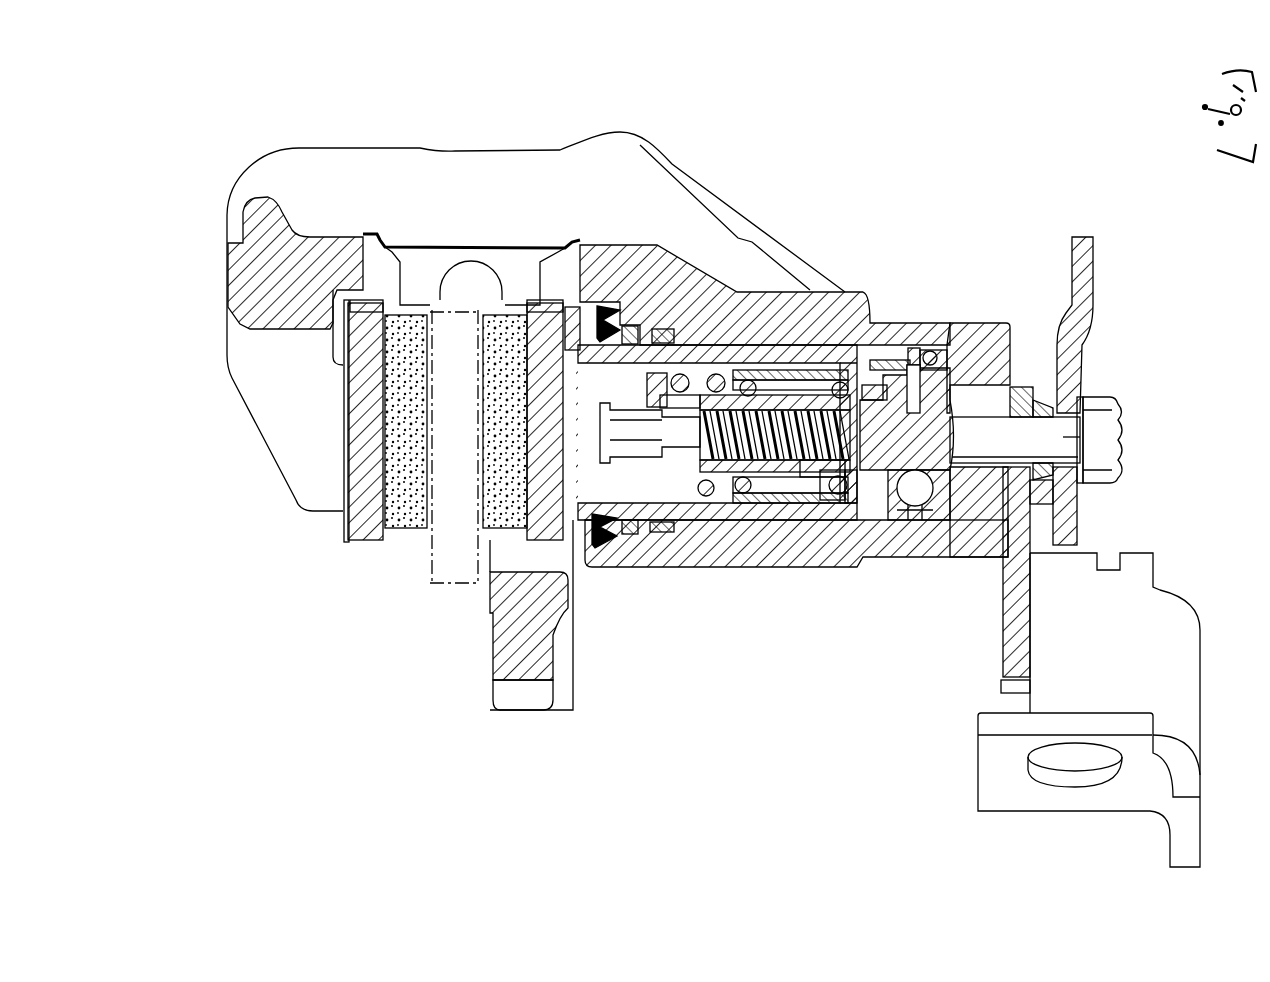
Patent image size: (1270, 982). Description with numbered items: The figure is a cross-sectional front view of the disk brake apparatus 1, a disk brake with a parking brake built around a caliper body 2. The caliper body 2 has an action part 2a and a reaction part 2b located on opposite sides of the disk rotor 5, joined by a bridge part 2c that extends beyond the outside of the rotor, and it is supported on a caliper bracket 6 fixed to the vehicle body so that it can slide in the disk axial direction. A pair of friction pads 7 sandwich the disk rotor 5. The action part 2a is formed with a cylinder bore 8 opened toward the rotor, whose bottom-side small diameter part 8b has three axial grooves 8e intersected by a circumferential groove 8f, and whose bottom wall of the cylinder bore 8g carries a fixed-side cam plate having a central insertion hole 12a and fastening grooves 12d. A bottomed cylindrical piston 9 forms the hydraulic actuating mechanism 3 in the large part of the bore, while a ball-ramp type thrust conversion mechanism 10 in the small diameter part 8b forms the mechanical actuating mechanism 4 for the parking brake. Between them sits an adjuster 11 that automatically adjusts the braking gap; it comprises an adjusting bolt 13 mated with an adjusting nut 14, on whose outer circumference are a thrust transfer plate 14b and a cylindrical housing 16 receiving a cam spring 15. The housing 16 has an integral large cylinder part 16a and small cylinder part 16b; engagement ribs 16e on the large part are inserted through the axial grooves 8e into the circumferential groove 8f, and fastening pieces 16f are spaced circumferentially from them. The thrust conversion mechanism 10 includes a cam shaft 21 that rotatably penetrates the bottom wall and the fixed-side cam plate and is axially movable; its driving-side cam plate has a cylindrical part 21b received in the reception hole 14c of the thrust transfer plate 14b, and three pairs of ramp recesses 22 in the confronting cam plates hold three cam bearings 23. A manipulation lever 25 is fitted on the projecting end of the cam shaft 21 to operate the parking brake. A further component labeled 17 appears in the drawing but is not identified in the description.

The disk brake apparatus 1 is at (681, 40).
The caliper body 2 is at (584, 283).
The action part 2a is at (975, 328).
The reaction part 2b is at (238, 340).
The bridge part 2c is at (458, 168).
The hydraulic actuating mechanism 3 is at (680, 545).
The mechanical actuating mechanism 4 is at (975, 370).
The disk rotor 5 is at (455, 586).
The caliper bracket 6 is at (540, 663).
The friction pads 7 is at (516, 304).
The cylinder bore 8 is at (706, 545).
The small diameter part 8b is at (858, 520).
The axial grooves 8e is at (840, 360).
The circumferential groove 8f is at (935, 360).
The bottom wall of the cylinder bore 8g is at (975, 540).
The piston 9 is at (650, 540).
The thrust conversion mechanism 10 is at (910, 522).
The adjuster 11 is at (762, 516).
The insertion hole 12a is at (945, 437).
The fastening grooves 12d is at (1030, 537).
The adjusting bolt 13 is at (745, 500).
The adjusting nut 14 is at (770, 505).
The thrust transfer plate 14b is at (835, 505).
The reception hole 14c is at (800, 500).
The cam spring 15 is at (748, 370).
The cylindrical housing 16 is at (822, 345).
The large cylinder part 16a is at (895, 370).
The small cylinder part 16b is at (783, 365).
The engagement ribs 16e is at (915, 360).
The fastening pieces 16f is at (940, 520).
The push rod 17 is at (703, 345).
The cam shaft 21 is at (1062, 440).
The cylindrical part 21b is at (868, 378).
The ramp recesses 22 is at (903, 505).
The cam bearings 23 is at (1030, 513).
The manipulation lever 25 is at (1093, 290).